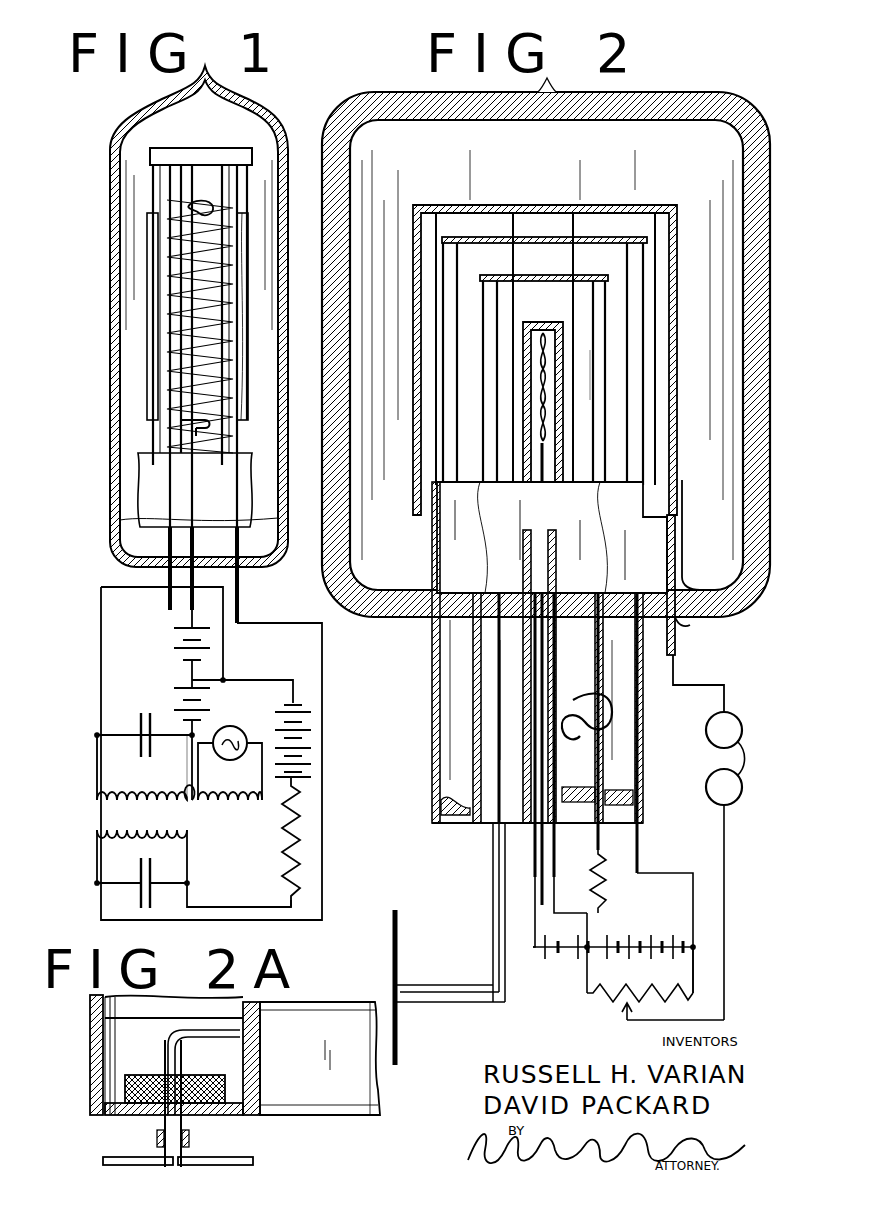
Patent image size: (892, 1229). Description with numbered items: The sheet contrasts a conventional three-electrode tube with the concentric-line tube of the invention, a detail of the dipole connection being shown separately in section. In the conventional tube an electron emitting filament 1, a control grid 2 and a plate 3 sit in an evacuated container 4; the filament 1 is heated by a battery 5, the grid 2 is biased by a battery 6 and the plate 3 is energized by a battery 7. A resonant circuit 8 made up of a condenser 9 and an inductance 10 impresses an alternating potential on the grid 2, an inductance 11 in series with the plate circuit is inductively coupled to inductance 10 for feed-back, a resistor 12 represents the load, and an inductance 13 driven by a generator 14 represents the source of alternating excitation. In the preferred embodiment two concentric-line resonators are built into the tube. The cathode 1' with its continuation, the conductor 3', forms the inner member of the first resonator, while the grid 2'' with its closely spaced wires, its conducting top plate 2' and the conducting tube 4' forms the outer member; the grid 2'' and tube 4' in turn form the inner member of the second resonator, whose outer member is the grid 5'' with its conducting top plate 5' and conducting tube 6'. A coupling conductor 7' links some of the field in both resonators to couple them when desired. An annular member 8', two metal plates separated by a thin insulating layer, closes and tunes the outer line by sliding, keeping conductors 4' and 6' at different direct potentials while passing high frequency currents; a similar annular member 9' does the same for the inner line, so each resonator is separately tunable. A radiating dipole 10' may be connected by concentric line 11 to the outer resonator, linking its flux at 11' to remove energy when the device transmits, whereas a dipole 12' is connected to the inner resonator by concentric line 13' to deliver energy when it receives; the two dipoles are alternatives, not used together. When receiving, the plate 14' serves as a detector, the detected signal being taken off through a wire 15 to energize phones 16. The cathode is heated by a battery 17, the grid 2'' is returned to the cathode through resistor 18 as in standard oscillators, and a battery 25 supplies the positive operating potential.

In FIG. 1, the electron emitting filament 1 is at (200, 326).
In FIG. 1, the control grid 2 is at (198, 304).
In FIG. 1, the plate 3 is at (205, 316).
In FIG. 1, the evacuated container 4 is at (206, 316).
In FIG. 1, the battery 5 is at (178, 644).
In FIG. 1, the battery 6 is at (178, 696).
In FIG. 1, the battery 7 is at (280, 737).
In FIG. 1, the resonant circuit 8 is at (142, 767).
In FIG. 1, the condenser 9 is at (133, 734).
In FIG. 1, the inductance 10 is at (146, 782).
In FIG. 1, the inductance 11 is at (142, 869).
In FIG. 2A, the inductance 11 is at (155, 1141).
In FIG. 1, the resistor 12 is at (274, 843).
In FIG. 1, the inductance 13 is at (230, 785).
In FIG. 1, the generator 14 is at (230, 753).
In FIG. 2, the cathode filament 1' is at (545, 601).
In FIG. 2, the conducting top plate 2' is at (544, 369).
In FIG. 2, the grid 2'' is at (610, 358).
In FIG. 2, the conductor 3' is at (508, 797).
In FIG. 2A, the conductor 3' is at (356, 1074).
In FIG. 2, the conducting tube 4' is at (612, 721).
In FIG. 2A, the conducting tube 4' is at (219, 1103).
In FIG. 2, the conducting top plate 5' is at (544, 350).
In FIG. 2, the grid 5'' is at (545, 360).
In FIG. 2, the conducting tube 6' is at (537, 652).
In FIG. 2A, the conducting tube 6' is at (160, 1055).
In FIG. 2, the coupling conductor 7' is at (587, 707).
In FIG. 2, the annular member 8' is at (656, 793).
In FIG. 2A, the annular member 8' is at (152, 1055).
In FIG. 2, the annular member 9' is at (573, 753).
In FIG. 2A, the annular member 9' is at (320, 1045).
In FIG. 2A, the radiating dipole 10' is at (178, 1148).
In FIG. 2A, the flux linking point 11' is at (204, 1054).
In FIG. 2, the dipole 12' is at (416, 987).
In FIG. 2, the concentric line 13' is at (449, 1007).
In FIG. 2, the plate 14' is at (546, 347).
In FIG. 2, the wire 15 is at (686, 540).
In FIG. 2, the phones 16 is at (742, 727).
In FIG. 2, the battery 17 is at (558, 957).
In FIG. 2, the resistor 18 is at (606, 888).
In FIG. 2, the battery 25 is at (658, 916).